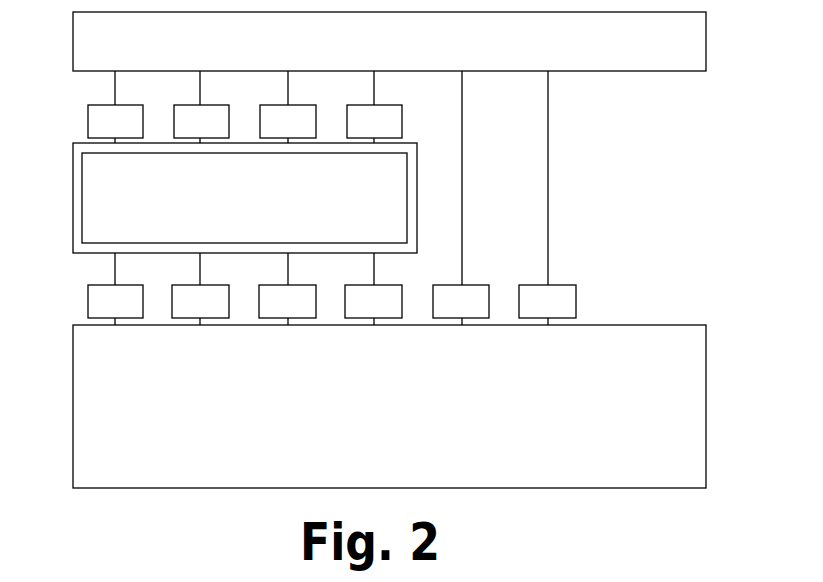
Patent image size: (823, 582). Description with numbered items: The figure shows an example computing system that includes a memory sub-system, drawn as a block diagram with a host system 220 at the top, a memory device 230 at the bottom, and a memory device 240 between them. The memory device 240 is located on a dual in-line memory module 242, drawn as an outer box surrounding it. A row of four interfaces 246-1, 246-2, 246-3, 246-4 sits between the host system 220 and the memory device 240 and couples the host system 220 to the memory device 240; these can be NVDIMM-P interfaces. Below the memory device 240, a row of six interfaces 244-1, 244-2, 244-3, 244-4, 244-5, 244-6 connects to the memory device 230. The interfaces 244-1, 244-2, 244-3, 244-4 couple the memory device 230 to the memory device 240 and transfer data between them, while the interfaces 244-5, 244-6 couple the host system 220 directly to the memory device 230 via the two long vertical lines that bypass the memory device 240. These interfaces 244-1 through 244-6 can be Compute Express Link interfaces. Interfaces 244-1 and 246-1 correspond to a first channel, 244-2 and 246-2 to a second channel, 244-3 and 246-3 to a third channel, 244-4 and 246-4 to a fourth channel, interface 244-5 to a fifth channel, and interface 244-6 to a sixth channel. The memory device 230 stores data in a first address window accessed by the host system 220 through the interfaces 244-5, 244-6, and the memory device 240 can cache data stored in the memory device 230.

The host system 220 is at (707, 40).
The memory device 230 is at (707, 405).
The memory device 240 is at (82, 217).
The dual in-line memory module (DIMM) 242 is at (73, 163).
The interface 244-1 is at (88, 303).
The interface 244-2 is at (172, 310).
The interface 244-3 is at (259, 310).
The interface 244-4 is at (345, 310).
The interface 244-5 is at (433, 310).
The interface 244-6 is at (519, 310).
The interface 246-1 is at (88, 122).
The interface 246-2 is at (192, 103).
The interface 246-3 is at (279, 103).
The interface 246-4 is at (366, 103).